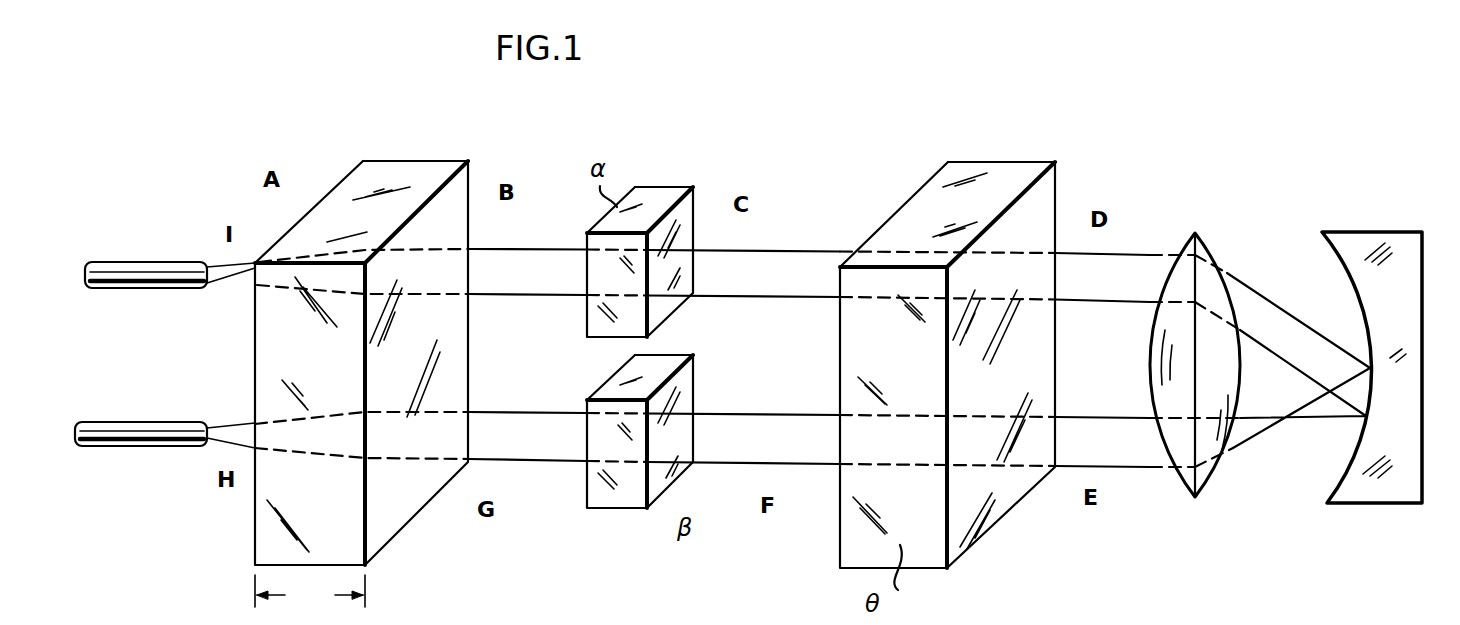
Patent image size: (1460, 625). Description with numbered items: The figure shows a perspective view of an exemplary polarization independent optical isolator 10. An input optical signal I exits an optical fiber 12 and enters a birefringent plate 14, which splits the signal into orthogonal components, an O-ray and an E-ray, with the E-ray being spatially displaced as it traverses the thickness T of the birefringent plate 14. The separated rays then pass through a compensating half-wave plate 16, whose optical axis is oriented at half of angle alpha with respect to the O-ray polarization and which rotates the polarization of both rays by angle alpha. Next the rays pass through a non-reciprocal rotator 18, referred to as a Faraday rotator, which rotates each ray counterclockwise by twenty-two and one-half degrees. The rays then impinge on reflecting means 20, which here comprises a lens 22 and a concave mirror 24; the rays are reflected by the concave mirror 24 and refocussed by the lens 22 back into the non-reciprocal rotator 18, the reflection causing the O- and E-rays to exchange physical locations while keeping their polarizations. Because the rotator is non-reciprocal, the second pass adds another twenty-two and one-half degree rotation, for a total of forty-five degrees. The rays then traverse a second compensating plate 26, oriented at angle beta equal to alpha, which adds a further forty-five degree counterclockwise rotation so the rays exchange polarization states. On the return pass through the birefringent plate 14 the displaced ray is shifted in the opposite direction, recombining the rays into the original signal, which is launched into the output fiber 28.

The polarization independent optical isolator 10 is at (787, 91).
The optical fiber 12 is at (157, 266).
The birefringent plate 14 is at (425, 160).
The compensating half-wave plate 16 is at (670, 190).
The non-reciprocal rotator 18 is at (1007, 172).
The reflecting means 20 is at (1175, 207).
The lens 22 is at (1192, 498).
The concave mirror 24 is at (1360, 490).
The second compensating plate 26 is at (607, 500).
The output fiber 28 is at (140, 447).